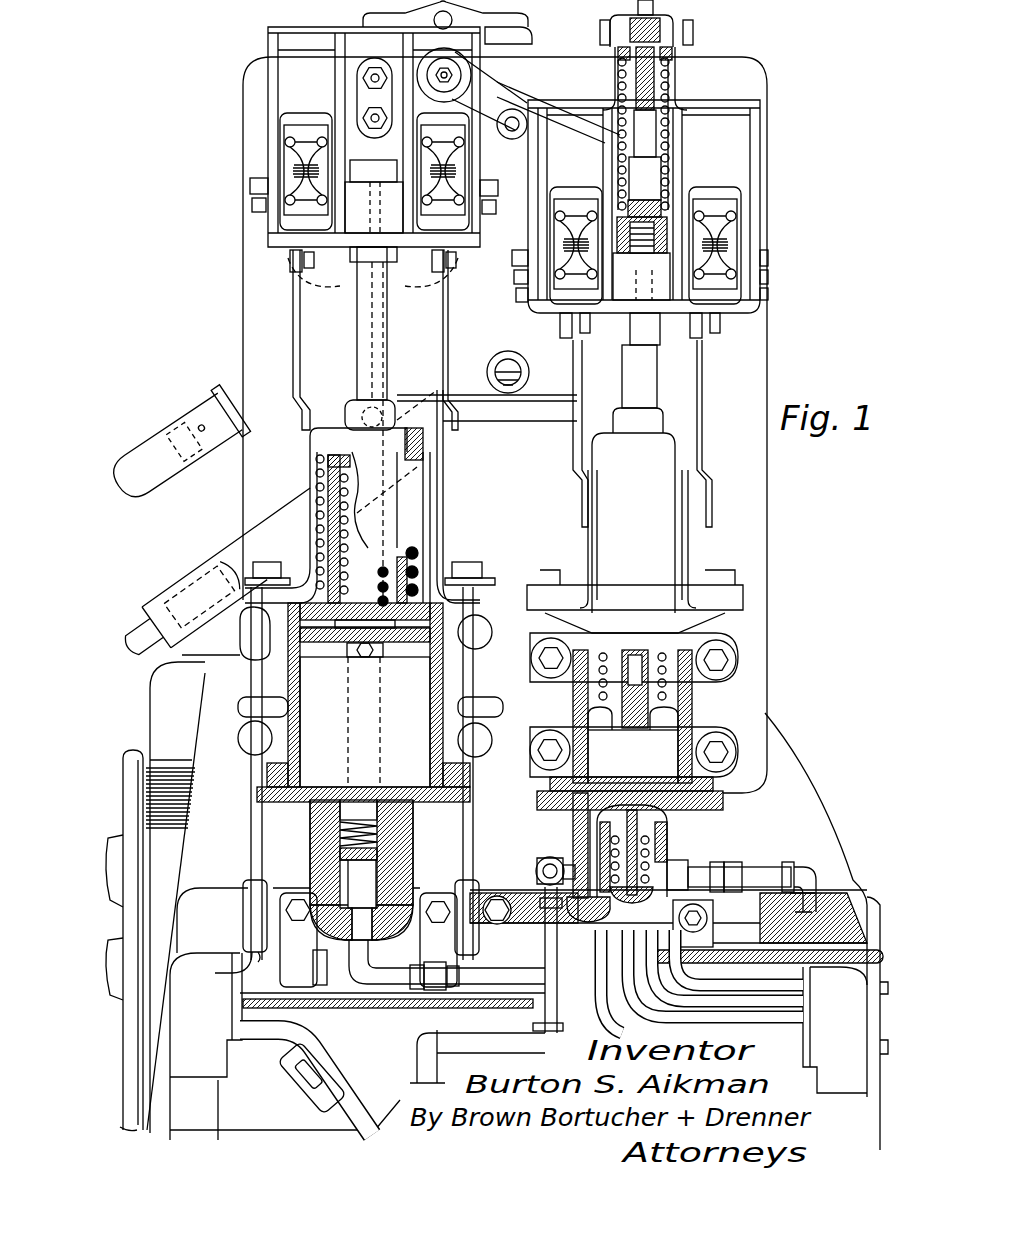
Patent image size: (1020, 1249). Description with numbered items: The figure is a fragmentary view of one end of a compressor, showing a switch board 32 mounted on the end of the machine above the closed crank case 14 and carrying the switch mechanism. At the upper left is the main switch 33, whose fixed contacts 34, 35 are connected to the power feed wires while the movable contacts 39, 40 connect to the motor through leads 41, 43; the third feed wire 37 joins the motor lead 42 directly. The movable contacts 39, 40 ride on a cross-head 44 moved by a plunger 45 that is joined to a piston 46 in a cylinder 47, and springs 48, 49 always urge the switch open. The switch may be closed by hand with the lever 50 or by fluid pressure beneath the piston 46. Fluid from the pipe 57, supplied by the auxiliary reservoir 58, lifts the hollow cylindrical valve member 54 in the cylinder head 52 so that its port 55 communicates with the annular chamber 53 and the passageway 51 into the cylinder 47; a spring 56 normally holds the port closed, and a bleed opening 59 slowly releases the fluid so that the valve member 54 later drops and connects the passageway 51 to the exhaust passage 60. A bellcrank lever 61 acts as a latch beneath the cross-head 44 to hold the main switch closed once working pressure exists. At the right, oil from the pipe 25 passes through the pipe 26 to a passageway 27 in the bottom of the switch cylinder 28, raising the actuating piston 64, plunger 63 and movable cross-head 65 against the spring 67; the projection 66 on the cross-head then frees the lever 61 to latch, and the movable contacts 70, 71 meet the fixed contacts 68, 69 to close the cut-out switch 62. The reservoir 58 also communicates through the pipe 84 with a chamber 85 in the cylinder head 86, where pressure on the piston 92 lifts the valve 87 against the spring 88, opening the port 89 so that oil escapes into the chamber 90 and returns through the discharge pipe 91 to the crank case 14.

The crank case 14 is at (777, 735).
The pipe 25 is at (395, 1052).
The pipe 26 is at (533, 962).
The passageway 27 is at (573, 838).
The switch cylinder 28 is at (670, 743).
The switch board 32 is at (757, 545).
The main switch 33 is at (265, 141).
The fixed contact 34 is at (303, 152).
The fixed contact 35 is at (447, 160).
The third feed wire 37 is at (338, 1102).
The movable contact 39 is at (300, 176).
The movable contact 40 is at (455, 194).
The lead 41 is at (250, 806).
The lead 42 is at (278, 1047).
The lead 43 is at (474, 843).
The cross-head 44 is at (330, 222).
The plunger 45 is at (378, 282).
The piston 46 is at (363, 702).
The cylinder 47 is at (280, 754).
The spring 48 is at (322, 468).
The spring 49 is at (318, 491).
The lever 50 is at (285, 552).
The passageway 51 is at (413, 832).
The cylinder head 52 is at (325, 838).
The annular chamber 53 is at (413, 846).
The hollow cylindrical valve member 54 is at (413, 860).
The port 55 is at (413, 876).
The spring 56 is at (393, 800).
The pipe 57 is at (366, 988).
The auxiliary reservoir 58 is at (400, 958).
The bleed opening 59 is at (309, 868).
The exhaust passage 60 is at (358, 795).
The bellcrank lever 61 is at (488, 400).
The cut-out switch 62 is at (762, 230).
The plunger 63 is at (645, 382).
The actuating piston 64 is at (633, 756).
The movable cross-head 65 is at (622, 372).
The projection 66 is at (650, 348).
The spring 67 is at (690, 664).
The fixed contact 68 is at (576, 225).
The fixed contact 69 is at (713, 225).
The movable contact 70 is at (552, 272).
The movable contact 71 is at (740, 262).
The pipe 84 is at (838, 965).
The chamber 85 is at (710, 918).
The cylinder head 86 is at (668, 836).
The valve 87 is at (673, 817).
The spring 88 is at (648, 852).
The port 89 is at (618, 800).
The chamber 90 is at (742, 868).
The discharge pipe 91 is at (778, 870).
The piston 92 is at (537, 871).